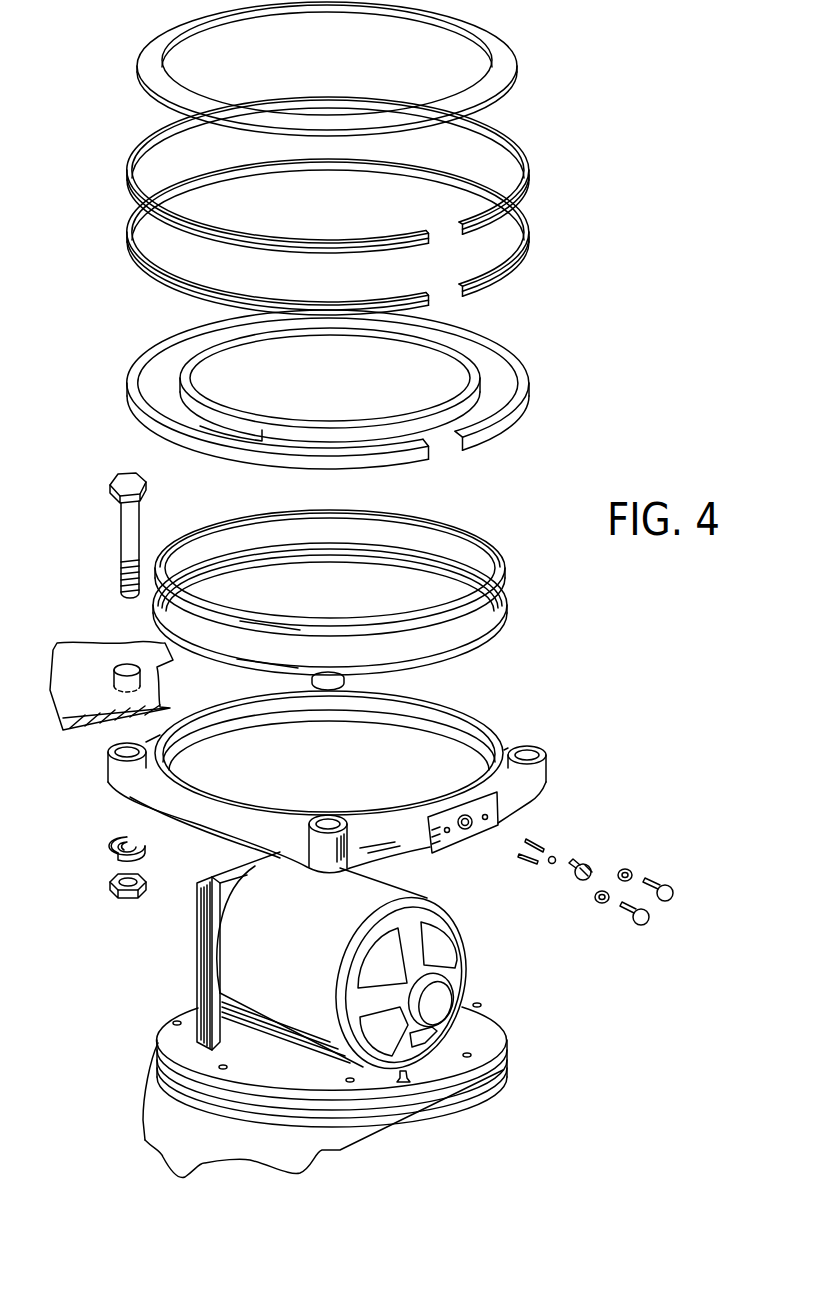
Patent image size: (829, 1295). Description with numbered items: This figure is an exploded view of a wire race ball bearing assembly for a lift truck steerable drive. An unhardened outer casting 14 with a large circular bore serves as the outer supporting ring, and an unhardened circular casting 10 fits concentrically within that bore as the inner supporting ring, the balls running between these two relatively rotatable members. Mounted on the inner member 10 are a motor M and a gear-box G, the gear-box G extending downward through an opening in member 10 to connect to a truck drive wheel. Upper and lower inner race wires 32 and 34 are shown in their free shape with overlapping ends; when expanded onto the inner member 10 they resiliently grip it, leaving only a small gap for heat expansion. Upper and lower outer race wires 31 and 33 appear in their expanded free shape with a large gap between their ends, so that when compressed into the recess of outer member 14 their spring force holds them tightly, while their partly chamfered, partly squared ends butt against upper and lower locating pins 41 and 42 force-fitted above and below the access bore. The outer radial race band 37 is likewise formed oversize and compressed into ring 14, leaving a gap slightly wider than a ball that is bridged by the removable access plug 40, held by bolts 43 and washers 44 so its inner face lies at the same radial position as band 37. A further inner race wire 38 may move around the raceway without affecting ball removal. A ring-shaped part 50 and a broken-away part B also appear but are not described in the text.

The retaining ring 50 is at (498, 53).
The upper outer race wire 31 is at (527, 158).
The lower outer race wire 33 is at (530, 234).
The outer radial race band 37 is at (525, 404).
The inner race wire 38 is at (330, 385).
The upper inner race wire 32 is at (500, 561).
The lower inner race wire 34 is at (505, 620).
The outer casting 14 is at (272, 838).
The upper locating pin 41 is at (540, 843).
The lower locating pin 42 is at (528, 863).
The removable access plug 40 is at (573, 876).
The washers 44 is at (608, 894).
The bolts 43 is at (652, 915).
The circular casting 10 is at (274, 1069).
The bracket B is at (104, 677).
The gear-box G is at (197, 975).
The motor M is at (299, 949).